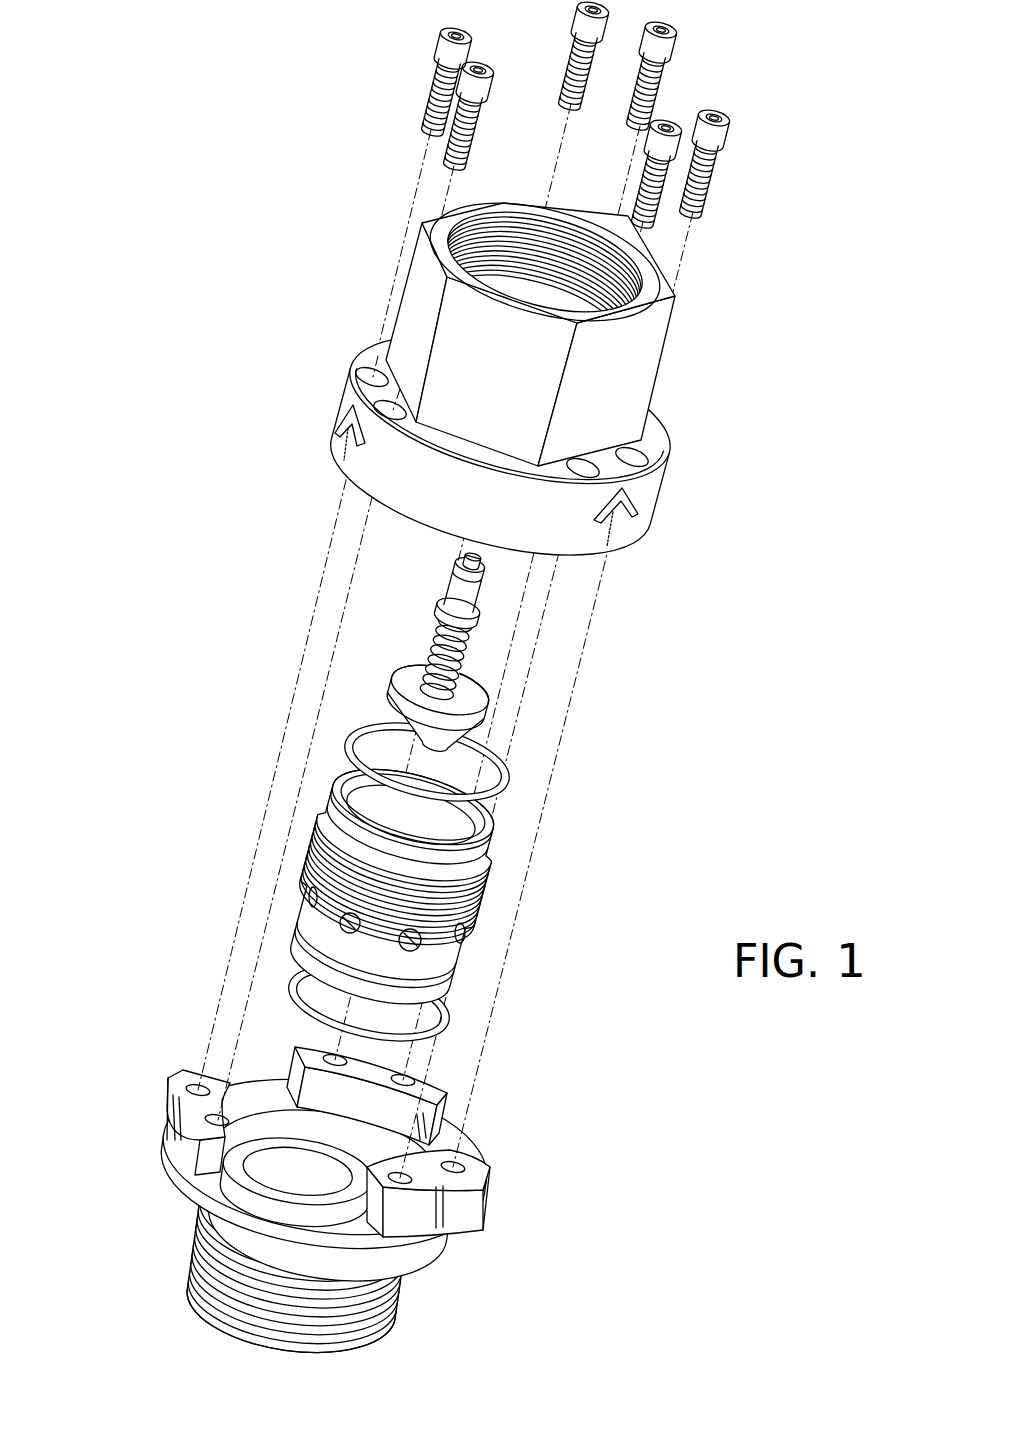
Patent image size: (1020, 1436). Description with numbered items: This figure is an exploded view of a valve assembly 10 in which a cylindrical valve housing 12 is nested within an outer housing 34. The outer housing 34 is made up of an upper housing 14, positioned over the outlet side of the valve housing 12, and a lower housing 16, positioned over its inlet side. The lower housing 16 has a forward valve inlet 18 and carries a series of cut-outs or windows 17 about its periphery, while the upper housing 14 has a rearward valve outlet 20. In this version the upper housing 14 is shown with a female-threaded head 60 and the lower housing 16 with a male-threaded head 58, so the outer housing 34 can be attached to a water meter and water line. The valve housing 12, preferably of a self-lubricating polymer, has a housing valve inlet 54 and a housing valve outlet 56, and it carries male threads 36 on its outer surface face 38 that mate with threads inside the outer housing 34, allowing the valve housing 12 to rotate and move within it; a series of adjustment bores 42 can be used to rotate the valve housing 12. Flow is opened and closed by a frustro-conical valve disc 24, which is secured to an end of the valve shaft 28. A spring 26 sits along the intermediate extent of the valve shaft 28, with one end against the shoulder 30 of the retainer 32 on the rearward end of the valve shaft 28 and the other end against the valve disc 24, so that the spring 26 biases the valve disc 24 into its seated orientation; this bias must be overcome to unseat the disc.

The assembly 10 is at (217, 162).
The cylindrical valve housing 12 is at (470, 930).
The upper housing 14 is at (655, 392).
The lower housing 16 is at (167, 1130).
The cut-outs or windows 17 is at (252, 1066).
The forward valve inlet 18 is at (193, 1313).
The rearward valve outlet 20 is at (473, 237).
The valve disc 24 is at (460, 738).
The spring 26 is at (432, 657).
The valve shaft 28 is at (462, 566).
The shoulder 30 is at (485, 597).
The retainer 32 is at (485, 625).
The outer housing 34 is at (665, 490).
The male threads 36 is at (315, 857).
The outer surface face 38 is at (328, 824).
The adjustment bores 42 is at (415, 938).
The housing valve inlet 54 is at (333, 973).
The housing valve outlet 56 is at (362, 788).
The male-threaded head 58 is at (395, 1310).
The female-threaded head 60 is at (674, 308).